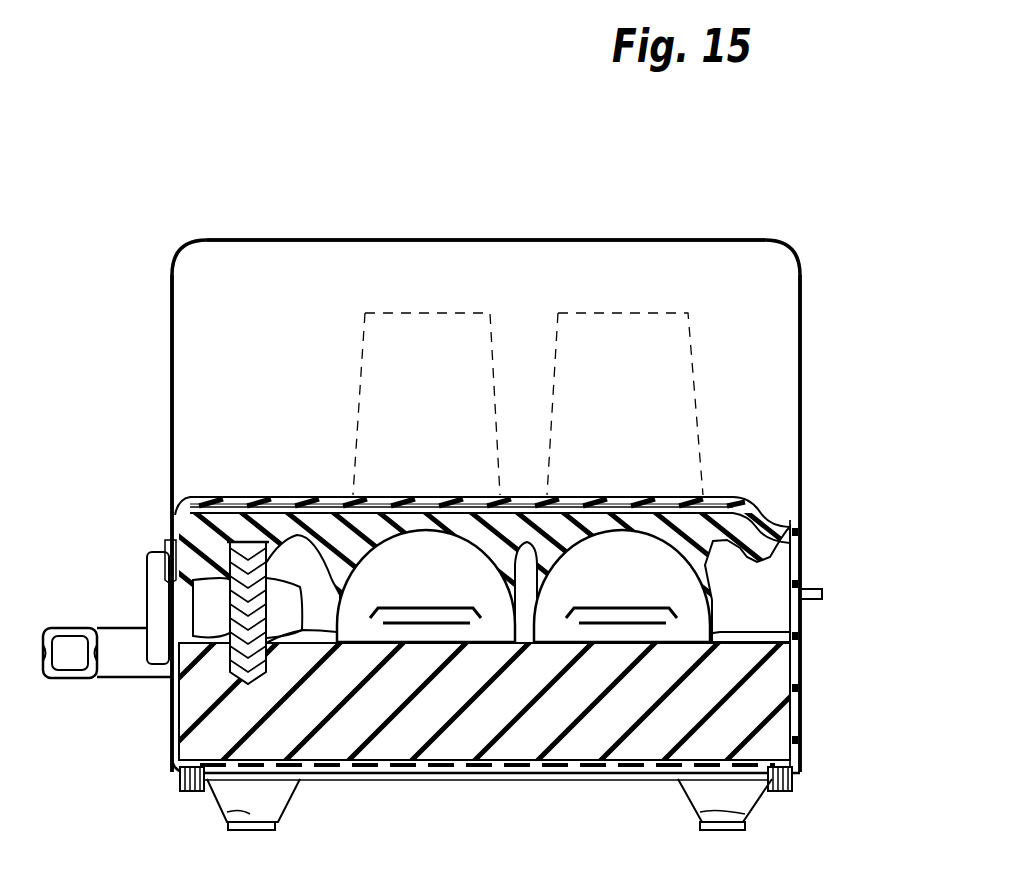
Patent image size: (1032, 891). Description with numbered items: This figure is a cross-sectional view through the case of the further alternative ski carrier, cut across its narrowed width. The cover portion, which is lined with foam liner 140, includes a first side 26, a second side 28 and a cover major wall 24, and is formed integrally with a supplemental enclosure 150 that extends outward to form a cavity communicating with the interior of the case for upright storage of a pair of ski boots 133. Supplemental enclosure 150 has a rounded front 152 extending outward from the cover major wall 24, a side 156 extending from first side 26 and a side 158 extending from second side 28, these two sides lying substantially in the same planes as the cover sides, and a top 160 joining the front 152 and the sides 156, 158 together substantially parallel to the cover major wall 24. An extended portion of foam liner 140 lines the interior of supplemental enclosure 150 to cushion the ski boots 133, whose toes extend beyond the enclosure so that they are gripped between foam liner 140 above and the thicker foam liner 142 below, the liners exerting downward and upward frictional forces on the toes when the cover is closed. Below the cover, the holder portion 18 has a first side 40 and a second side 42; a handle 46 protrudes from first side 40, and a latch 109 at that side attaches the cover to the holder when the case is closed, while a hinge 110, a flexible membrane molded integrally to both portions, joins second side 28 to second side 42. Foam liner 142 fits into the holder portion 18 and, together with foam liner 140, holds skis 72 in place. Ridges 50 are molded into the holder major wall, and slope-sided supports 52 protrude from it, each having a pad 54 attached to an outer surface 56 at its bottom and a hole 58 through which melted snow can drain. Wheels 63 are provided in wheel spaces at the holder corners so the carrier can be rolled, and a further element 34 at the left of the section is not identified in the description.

The supplemental enclosure portion 150 is at (800, 244).
The front 152 is at (503, 262).
The side 156 is at (170, 360).
The side 158 is at (800, 340).
The top 160 is at (310, 240).
The cover major wall 24 is at (735, 497).
The foam liner 140 is at (770, 510).
The second side 28 is at (745, 532).
The ski boots 133 is at (670, 591).
The hinge 110 is at (822, 595).
The second side 42 is at (805, 638).
The foam liner 142 is at (775, 693).
The wheels 63 is at (793, 782).
The hole 58 is at (232, 818).
The outer surface 56 is at (242, 830).
The pad 54 is at (257, 827).
The supports 52 is at (293, 798).
The ridges 50 is at (515, 770).
The holder portion 18 is at (593, 780).
The skis 72 is at (235, 692).
The first side 40 is at (172, 690).
The handle 46 is at (85, 627).
The latches 109 is at (147, 578).
The screw 34 is at (215, 548).
The first side 26 is at (167, 520).